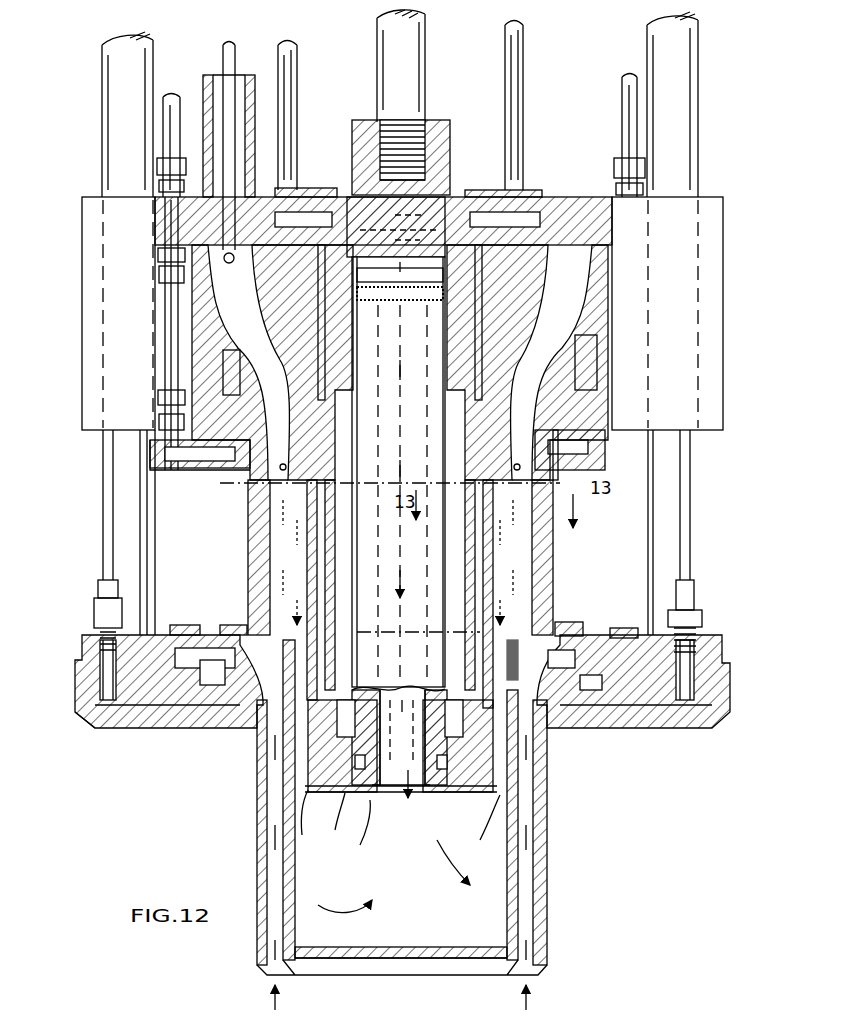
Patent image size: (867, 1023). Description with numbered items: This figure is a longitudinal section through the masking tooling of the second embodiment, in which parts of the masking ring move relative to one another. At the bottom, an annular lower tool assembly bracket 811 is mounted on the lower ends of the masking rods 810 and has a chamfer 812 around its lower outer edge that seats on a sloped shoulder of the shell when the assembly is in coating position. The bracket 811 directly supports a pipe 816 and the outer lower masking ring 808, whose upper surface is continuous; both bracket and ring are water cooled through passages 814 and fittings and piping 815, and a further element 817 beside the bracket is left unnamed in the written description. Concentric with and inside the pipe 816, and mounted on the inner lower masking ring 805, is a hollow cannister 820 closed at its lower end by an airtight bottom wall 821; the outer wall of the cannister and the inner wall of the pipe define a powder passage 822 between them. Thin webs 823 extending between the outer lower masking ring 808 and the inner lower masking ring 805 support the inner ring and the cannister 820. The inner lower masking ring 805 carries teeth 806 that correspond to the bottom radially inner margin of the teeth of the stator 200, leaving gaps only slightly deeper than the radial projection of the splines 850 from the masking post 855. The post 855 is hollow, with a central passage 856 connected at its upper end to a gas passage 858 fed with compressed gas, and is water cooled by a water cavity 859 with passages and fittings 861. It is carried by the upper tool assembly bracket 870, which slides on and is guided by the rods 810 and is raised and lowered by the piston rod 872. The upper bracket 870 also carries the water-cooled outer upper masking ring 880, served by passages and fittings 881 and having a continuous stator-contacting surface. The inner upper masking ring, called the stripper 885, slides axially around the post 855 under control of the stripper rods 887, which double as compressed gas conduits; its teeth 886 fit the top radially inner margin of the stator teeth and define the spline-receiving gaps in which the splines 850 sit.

The stator 200 is at (553, 553).
The inner lower masking ring 805 is at (535, 640).
The teeth 806 is at (505, 645).
The outer lower masking ring 808 is at (606, 642).
The masking rods 810 is at (120, 536).
The lower tool assembly bracket 811 is at (712, 633).
The chamfer 812 is at (80, 722).
The passages 814 is at (700, 698).
The fittings and piping 815 is at (108, 615).
The pipe 816 is at (547, 830).
The base flange 817 is at (100, 676).
The cannister 820 is at (442, 960).
The bottom wall 821 is at (330, 958).
The powder passage 822 is at (530, 884).
The thin webs 823 is at (265, 722).
The splines 850 is at (308, 777).
The masking post 855 is at (336, 851).
The central passage 856 is at (403, 775).
The gas passage 858 is at (452, 182).
The water cavity 859 is at (340, 597).
The passages and fittings 861 is at (298, 222).
The upper tool assembly bracket 870 is at (726, 328).
The piston rod 872 is at (406, 47).
The outer upper masking ring 880 is at (288, 483).
The passages and fittings 881 is at (165, 318).
The stripper 885 is at (552, 512).
The teeth 886 is at (300, 480).
The stripper rods 887 is at (290, 86).